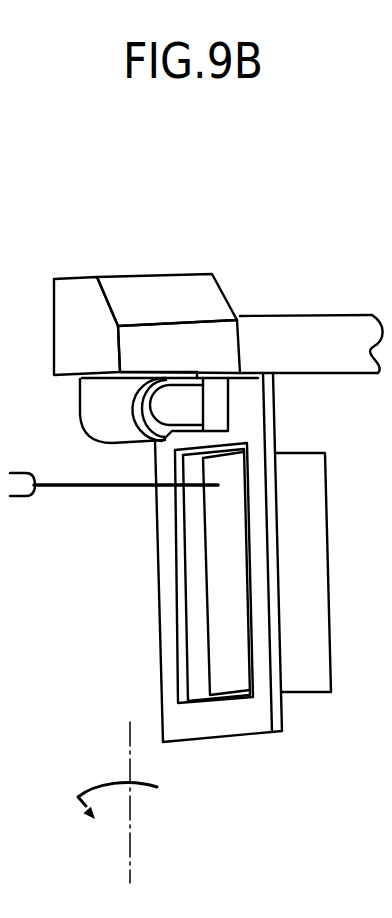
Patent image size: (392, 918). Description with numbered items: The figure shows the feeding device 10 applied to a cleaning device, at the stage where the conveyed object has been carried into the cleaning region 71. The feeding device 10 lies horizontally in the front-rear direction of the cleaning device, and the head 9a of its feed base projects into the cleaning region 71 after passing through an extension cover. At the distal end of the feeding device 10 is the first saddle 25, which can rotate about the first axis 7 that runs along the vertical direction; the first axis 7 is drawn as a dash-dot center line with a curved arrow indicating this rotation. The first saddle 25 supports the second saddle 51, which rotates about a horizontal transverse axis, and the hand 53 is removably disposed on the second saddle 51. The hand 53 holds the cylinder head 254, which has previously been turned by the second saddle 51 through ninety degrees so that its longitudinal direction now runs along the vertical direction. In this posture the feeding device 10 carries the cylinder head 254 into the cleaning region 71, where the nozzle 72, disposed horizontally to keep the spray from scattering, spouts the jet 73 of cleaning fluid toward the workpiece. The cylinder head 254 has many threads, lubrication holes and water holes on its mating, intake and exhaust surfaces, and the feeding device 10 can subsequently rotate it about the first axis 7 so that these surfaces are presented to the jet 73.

The head 9a is at (116, 277).
The feeding device 10 is at (290, 311).
The first saddle 25 is at (83, 397).
The second saddle 51 is at (274, 405).
The hand 53 is at (220, 740).
The cylinder head 254 is at (327, 515).
The jet 73 is at (117, 487).
The nozzle 72 is at (22, 498).
The cleaning region 71 is at (93, 630).
The first axis 7 is at (130, 863).